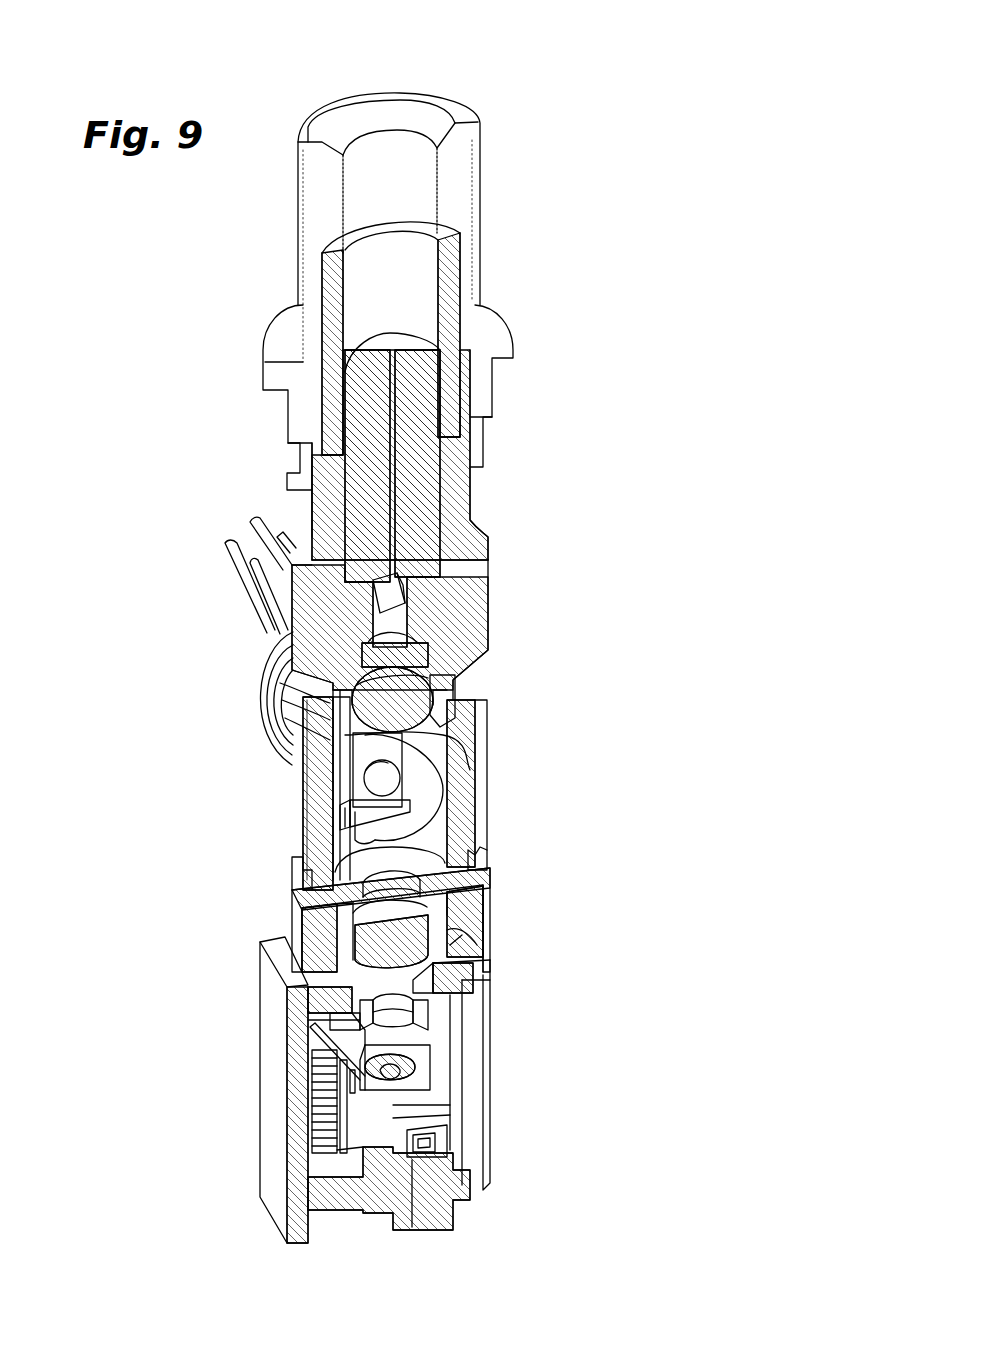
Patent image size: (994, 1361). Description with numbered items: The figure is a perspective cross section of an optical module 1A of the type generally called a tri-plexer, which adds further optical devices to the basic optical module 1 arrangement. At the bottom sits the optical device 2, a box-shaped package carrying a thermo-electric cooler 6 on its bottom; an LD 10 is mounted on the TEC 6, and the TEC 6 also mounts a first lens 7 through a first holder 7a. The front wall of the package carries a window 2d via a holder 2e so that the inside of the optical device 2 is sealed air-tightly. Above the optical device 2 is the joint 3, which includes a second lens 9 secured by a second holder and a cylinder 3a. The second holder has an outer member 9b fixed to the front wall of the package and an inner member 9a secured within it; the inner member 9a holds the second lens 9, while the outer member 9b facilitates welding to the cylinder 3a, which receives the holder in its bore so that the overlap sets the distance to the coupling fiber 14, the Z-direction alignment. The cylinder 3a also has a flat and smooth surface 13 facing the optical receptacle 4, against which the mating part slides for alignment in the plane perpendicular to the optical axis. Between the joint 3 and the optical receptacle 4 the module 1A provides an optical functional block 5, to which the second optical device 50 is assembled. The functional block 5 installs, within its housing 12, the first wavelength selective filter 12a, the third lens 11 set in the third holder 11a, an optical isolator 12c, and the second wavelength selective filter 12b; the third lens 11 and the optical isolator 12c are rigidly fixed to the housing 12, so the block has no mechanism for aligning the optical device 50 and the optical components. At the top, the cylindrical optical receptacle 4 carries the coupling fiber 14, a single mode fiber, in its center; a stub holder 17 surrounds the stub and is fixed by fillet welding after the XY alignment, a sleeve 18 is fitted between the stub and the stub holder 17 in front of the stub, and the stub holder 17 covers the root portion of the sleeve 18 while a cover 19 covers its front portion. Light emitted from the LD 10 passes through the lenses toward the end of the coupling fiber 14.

The optical module 1A is at (528, 105).
The sleeve cap 19 is at (465, 193).
The sleeve 18 is at (462, 276).
The optical receptacle 4 is at (578, 537).
The coupling fiber 14 is at (405, 383).
The stub holder 17 is at (455, 496).
The optical module 1 is at (440, 562).
The second wavelength selective filter 12b is at (405, 602).
The optical isolator 12c is at (420, 655).
The third lens 11 is at (408, 693).
The optical functional block 5 is at (616, 540).
The third holder 11a is at (440, 720).
The second optical device 50 is at (290, 738).
The first wavelength selective filter 12a is at (342, 797).
The housing 12 is at (315, 828).
The flat and smooth surface 13 is at (480, 855).
The joint 3 is at (174, 872).
The cylinder 3a is at (292, 917).
The second lens 9 is at (400, 935).
The inner member 9a is at (440, 925).
The outer member 9b is at (470, 945).
The holder 2e is at (440, 990).
The window 2d is at (420, 1013).
The optical device 2 is at (174, 940).
The first holder 7a is at (420, 1060).
The first lens 7 is at (410, 1078).
The thermo-electric cooler 6 is at (318, 1113).
The LD 10 is at (440, 1133).